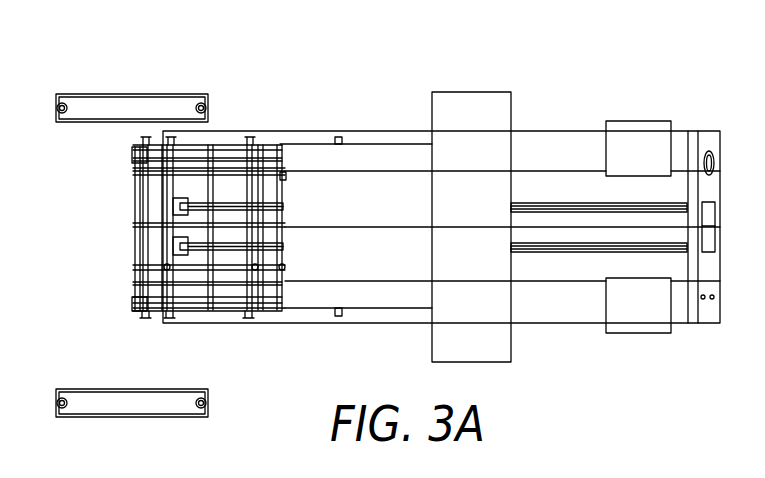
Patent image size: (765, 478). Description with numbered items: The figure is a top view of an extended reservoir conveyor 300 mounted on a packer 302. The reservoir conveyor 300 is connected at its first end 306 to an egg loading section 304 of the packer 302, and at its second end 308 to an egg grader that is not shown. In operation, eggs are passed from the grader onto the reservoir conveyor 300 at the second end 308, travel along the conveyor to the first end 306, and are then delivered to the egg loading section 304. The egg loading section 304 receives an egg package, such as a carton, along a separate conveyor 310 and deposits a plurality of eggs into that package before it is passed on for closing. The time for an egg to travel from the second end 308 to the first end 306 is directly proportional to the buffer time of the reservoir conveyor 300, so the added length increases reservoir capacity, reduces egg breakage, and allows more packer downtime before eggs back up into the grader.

The reservoir conveyor 300 is at (188, 278).
The packer 302 is at (580, 131).
The egg loading section 304 is at (472, 92).
The first end 306 is at (280, 193).
The second end 308 is at (150, 200).
The conveyor 310 is at (549, 270).